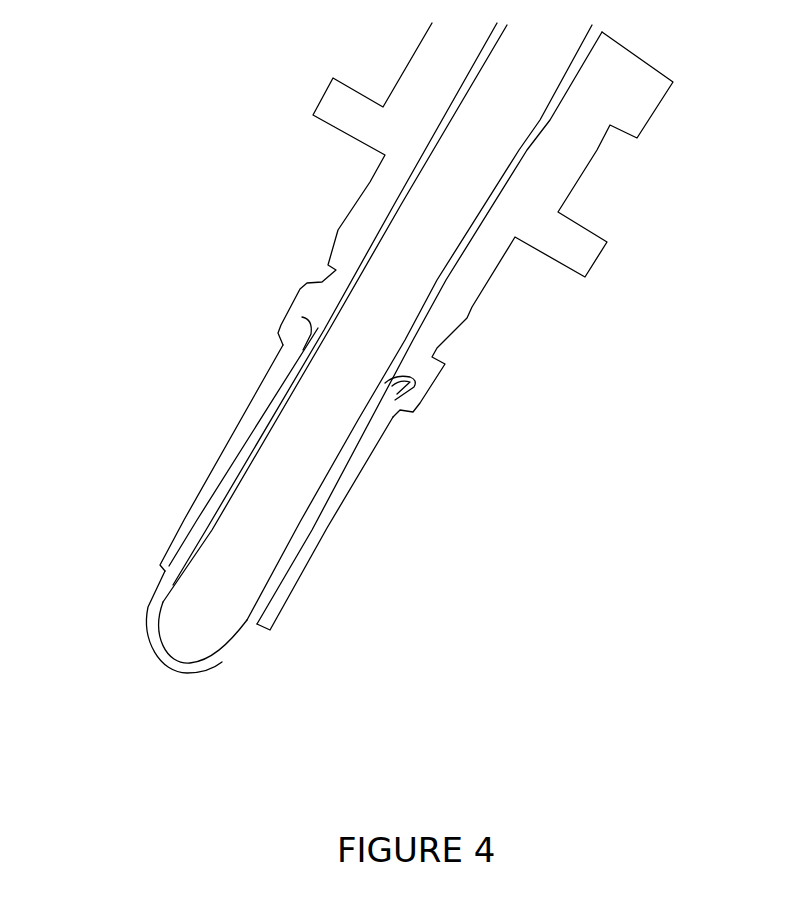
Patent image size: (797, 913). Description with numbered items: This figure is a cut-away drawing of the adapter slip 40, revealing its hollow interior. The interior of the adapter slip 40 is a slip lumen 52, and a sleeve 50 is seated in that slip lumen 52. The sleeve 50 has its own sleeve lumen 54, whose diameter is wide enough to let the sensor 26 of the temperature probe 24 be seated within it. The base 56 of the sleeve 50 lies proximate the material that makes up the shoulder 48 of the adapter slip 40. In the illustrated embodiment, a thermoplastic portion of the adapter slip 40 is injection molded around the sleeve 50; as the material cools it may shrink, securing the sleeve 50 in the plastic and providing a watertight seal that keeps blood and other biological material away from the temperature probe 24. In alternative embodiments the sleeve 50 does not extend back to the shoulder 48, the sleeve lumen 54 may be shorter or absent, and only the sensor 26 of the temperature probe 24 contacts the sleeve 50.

The temperature probe 24 is at (483, 165).
The sensor 26 is at (188, 622).
The adapter slip 40 is at (324, 530).
The shoulder 48 is at (420, 397).
The sleeve 50 is at (218, 660).
The slip lumen 52 is at (422, 217).
The sleeve lumen 54 is at (287, 460).
The base 56 is at (303, 290).